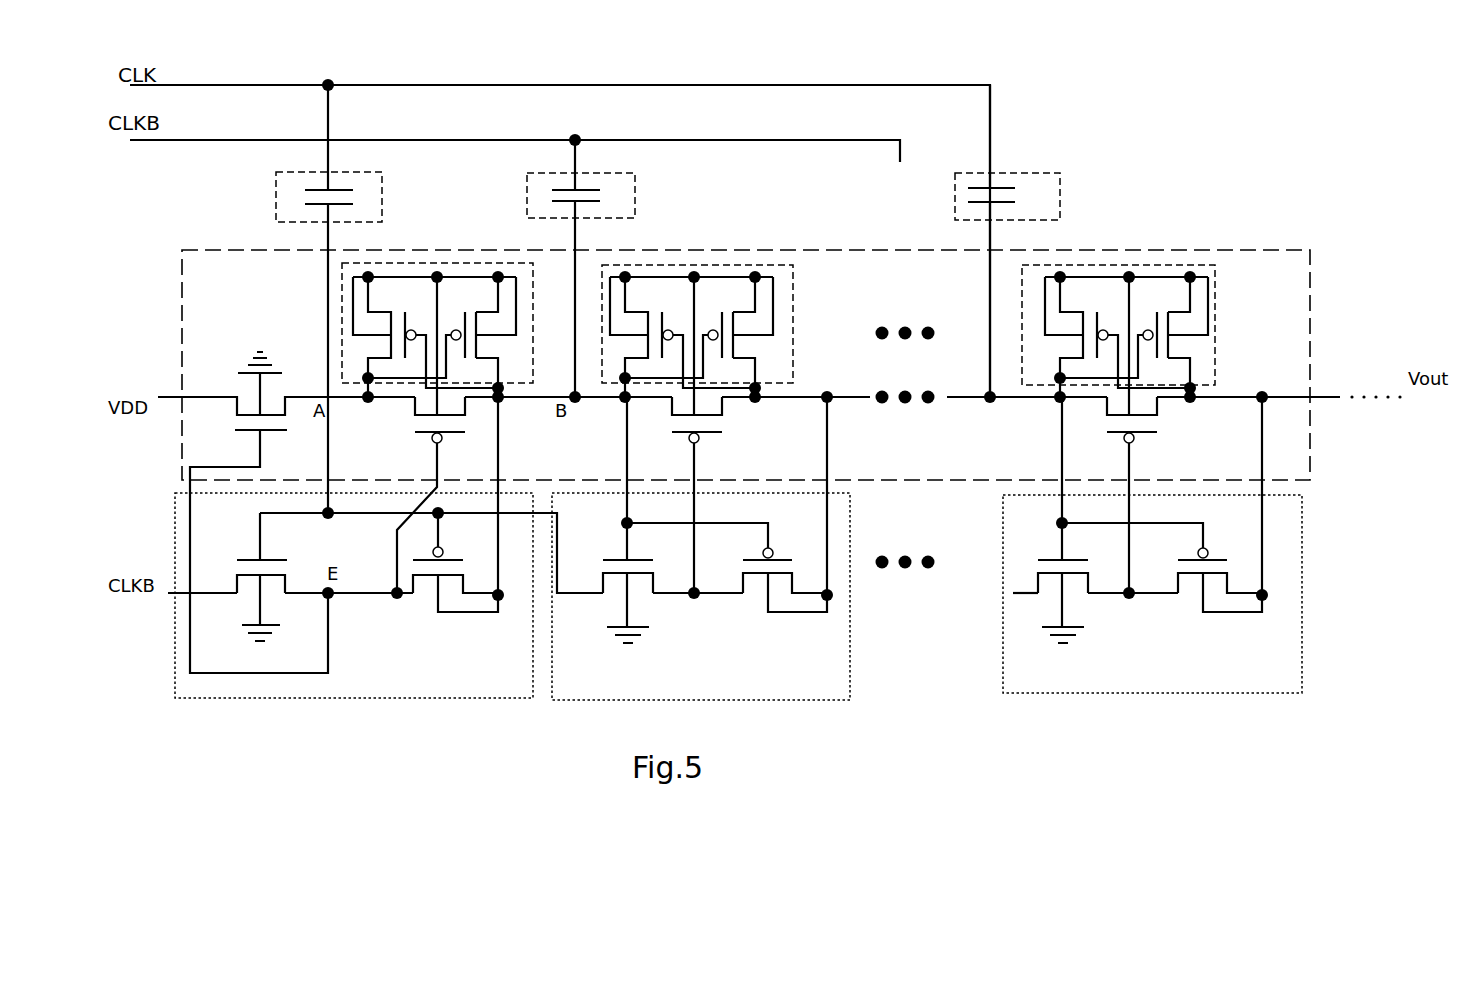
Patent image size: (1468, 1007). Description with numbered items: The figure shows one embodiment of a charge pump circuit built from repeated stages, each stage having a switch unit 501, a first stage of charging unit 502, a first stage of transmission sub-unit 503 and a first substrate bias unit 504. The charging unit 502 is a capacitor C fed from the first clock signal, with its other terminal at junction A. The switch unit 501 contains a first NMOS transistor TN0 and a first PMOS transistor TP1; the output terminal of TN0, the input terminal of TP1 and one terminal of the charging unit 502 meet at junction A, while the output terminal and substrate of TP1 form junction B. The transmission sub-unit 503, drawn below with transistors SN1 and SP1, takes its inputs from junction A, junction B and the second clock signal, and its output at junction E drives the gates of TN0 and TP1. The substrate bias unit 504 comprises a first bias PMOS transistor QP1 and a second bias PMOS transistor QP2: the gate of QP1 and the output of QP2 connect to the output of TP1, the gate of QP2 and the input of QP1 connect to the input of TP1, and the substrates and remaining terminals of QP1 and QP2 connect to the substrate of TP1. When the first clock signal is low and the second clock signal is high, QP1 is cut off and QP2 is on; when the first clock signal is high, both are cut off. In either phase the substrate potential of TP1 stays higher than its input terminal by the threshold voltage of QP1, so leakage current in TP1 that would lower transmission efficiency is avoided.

The switch unit 501 is at (180, 320).
The first stage of charging unit 502 is at (300, 192).
The first stage of transmission sub-unit 503 is at (385, 571).
The first substrate bias unit 504 is at (458, 319).
The capacitor C is at (337, 189).
The first NMOS transistor TN0 is at (228, 422).
The first PMOS transistor TP1 is at (400, 422).
The first bias PMOS transistor QP1 is at (392, 306).
The second bias PMOS transistor QP2 is at (463, 302).
The NMOS switch transistor SN1 is at (247, 553).
The PMOS switch transistor SP1 is at (412, 602).